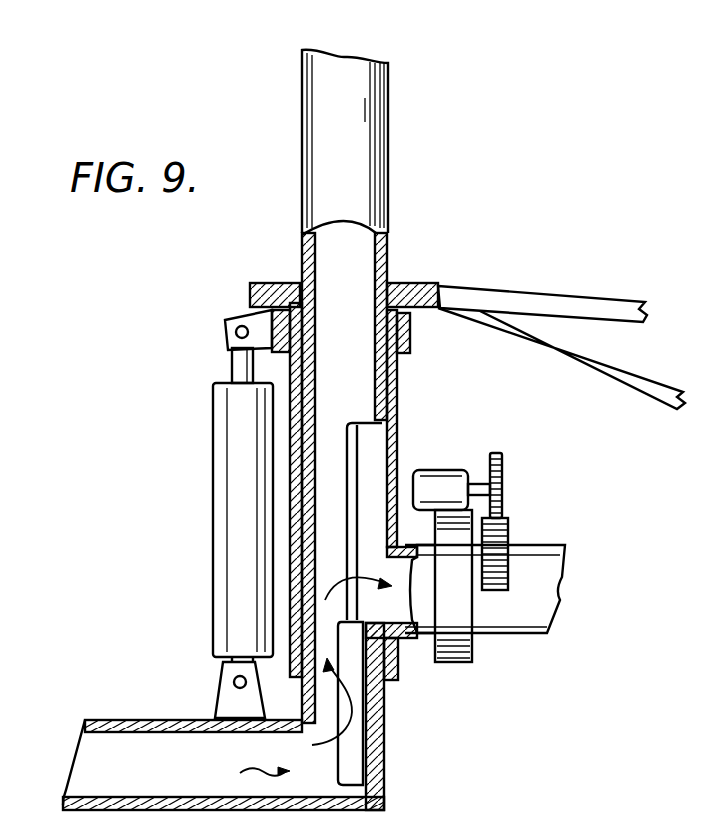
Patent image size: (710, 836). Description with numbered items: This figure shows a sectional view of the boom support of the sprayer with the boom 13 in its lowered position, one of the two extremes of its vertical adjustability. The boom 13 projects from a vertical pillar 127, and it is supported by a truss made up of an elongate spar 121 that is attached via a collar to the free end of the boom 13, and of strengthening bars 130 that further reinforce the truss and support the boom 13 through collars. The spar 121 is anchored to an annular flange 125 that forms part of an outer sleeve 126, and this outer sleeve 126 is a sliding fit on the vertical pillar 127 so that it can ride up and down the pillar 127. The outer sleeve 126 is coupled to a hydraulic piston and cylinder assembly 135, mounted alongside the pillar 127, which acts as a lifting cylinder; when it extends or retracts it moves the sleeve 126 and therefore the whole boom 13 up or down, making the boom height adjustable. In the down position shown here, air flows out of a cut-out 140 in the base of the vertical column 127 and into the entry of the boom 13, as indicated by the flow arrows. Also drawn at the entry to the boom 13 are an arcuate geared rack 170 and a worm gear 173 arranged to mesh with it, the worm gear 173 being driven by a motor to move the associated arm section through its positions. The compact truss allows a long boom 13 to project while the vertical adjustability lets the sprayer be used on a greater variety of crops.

The boom 13 is at (527, 603).
The elongate spar 121 is at (552, 302).
The annular flange 125 is at (425, 282).
The outer sleeve 126 is at (398, 396).
The vertical pillar 127 is at (363, 135).
The strengthening bars 130 is at (617, 372).
The hydraulic piston and cylinder assembly 135 is at (242, 428).
The cut-out 140 is at (347, 488).
The arcuate geared rack 170 is at (508, 528).
The worm gear 173 is at (502, 480).